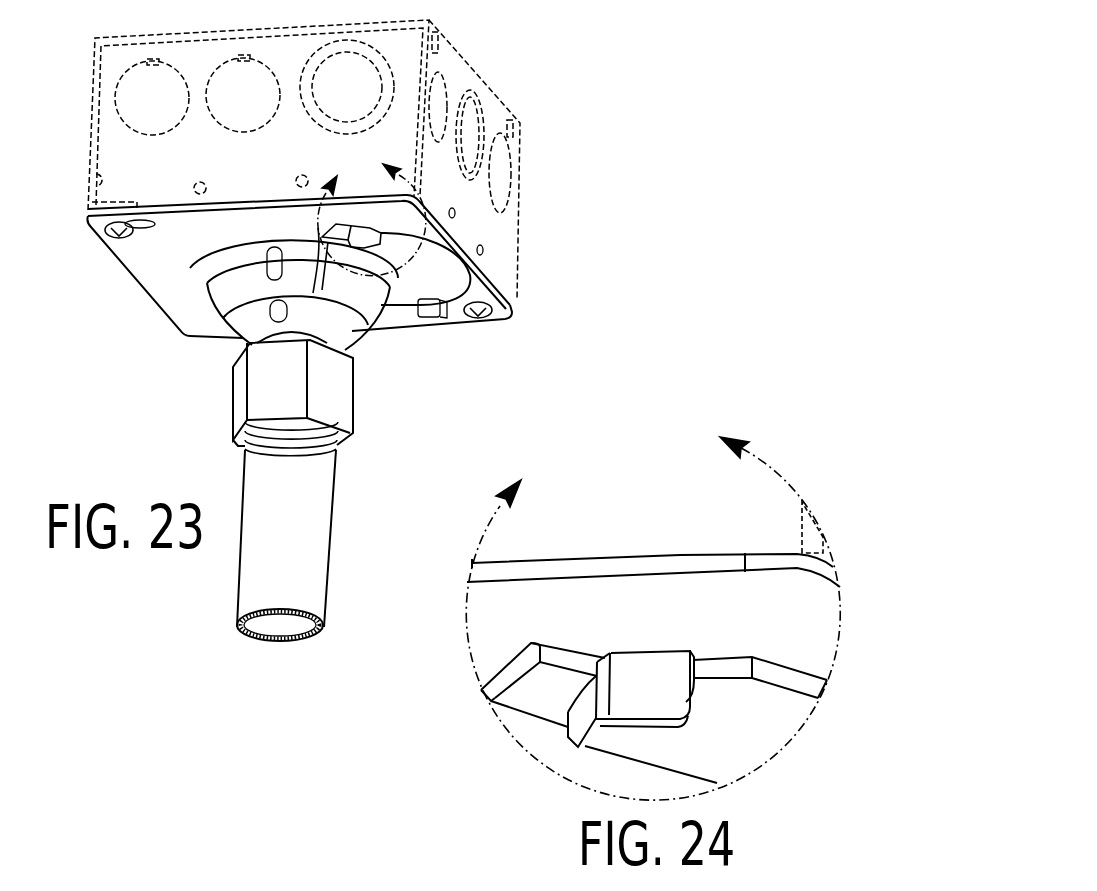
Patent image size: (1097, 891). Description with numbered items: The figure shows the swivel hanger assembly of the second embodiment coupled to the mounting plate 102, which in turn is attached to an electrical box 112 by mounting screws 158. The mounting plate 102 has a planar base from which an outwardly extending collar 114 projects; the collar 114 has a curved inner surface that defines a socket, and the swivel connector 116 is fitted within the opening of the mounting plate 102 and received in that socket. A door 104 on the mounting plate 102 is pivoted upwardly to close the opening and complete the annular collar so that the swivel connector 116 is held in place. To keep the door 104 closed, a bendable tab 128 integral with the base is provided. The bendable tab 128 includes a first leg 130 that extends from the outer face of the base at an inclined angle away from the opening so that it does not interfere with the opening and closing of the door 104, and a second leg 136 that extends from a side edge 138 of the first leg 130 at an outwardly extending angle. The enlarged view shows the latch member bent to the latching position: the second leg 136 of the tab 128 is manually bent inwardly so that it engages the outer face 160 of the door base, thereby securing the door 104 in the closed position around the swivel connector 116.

In FIG. 23, the mounting plate 102 is at (312, 389).
In FIG. 23, the door 104 is at (457, 243).
In FIG. 24, the door 104 is at (800, 655).
In FIG. 23, the electrical box 112 is at (522, 153).
In FIG. 23, the collar 114 is at (205, 297).
In FIG. 23, the swivel connector 116 is at (360, 416).
In FIG. 23, the bendable tab 128 is at (372, 210).
In FIG. 24, the first leg 130 is at (655, 685).
In FIG. 24, the second leg 136 is at (589, 735).
In FIG. 24, the side edge 138 is at (607, 688).
In FIG. 23, the mounting screws 158 is at (120, 237).
In FIG. 24, the outer face 160 is at (738, 722).